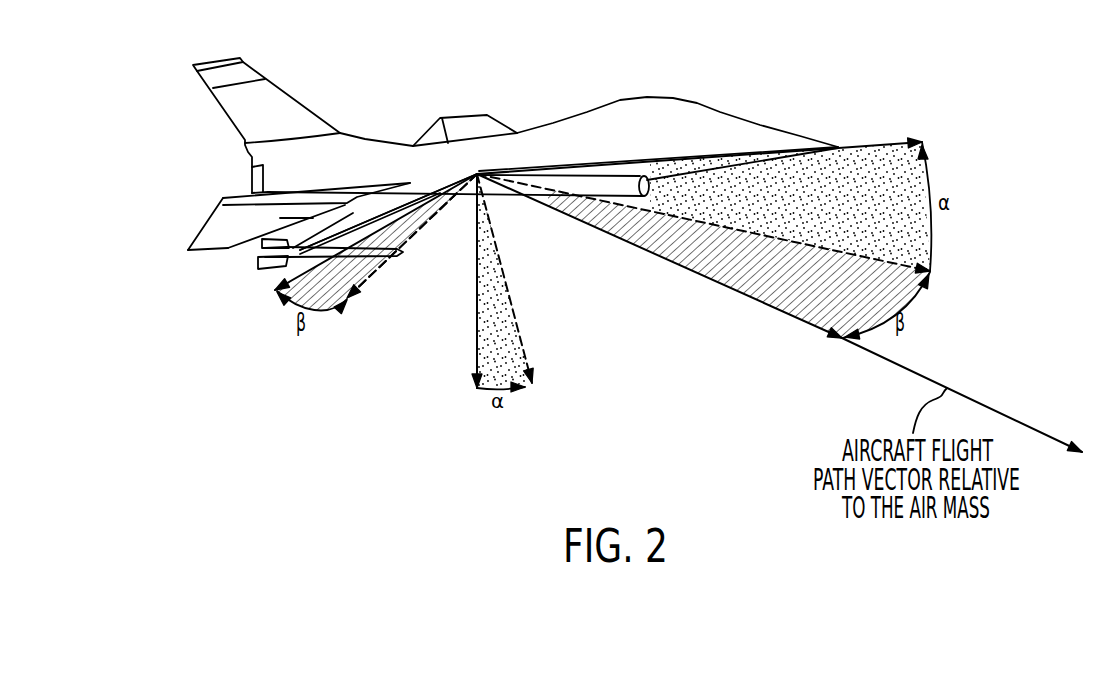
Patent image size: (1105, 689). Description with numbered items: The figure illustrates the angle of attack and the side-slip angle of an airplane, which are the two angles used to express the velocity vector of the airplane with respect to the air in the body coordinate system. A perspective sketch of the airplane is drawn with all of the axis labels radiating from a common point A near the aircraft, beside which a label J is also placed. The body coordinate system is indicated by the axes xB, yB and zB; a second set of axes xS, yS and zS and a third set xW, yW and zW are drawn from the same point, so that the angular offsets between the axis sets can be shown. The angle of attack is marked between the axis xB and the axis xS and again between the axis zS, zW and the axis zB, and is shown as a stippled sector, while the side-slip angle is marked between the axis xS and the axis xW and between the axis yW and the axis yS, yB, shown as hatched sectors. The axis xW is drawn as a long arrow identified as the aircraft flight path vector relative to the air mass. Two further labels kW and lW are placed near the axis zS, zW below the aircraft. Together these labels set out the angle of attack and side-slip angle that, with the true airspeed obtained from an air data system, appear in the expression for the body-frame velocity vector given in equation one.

The aircraft reference point (aircraft) A is at (513, 163).
The aircraft body frame origin J is at (388, 203).
The wind axis unit vector k kW is at (489, 281).
The wind axis unit vector l lW is at (703, 256).
The body frame x axis xB is at (712, 202).
The stability frame x axis xS is at (718, 256).
The wind frame x axis (flight path vector) xW is at (779, 313).
The wind frame y axis yW is at (364, 244).
The stability frame y axis yS is at (412, 249).
The body frame y axis yB is at (412, 249).
The stability frame z axis zS is at (467, 284).
The wind frame z axis zW is at (462, 283).
The body frame z axis zB is at (520, 283).